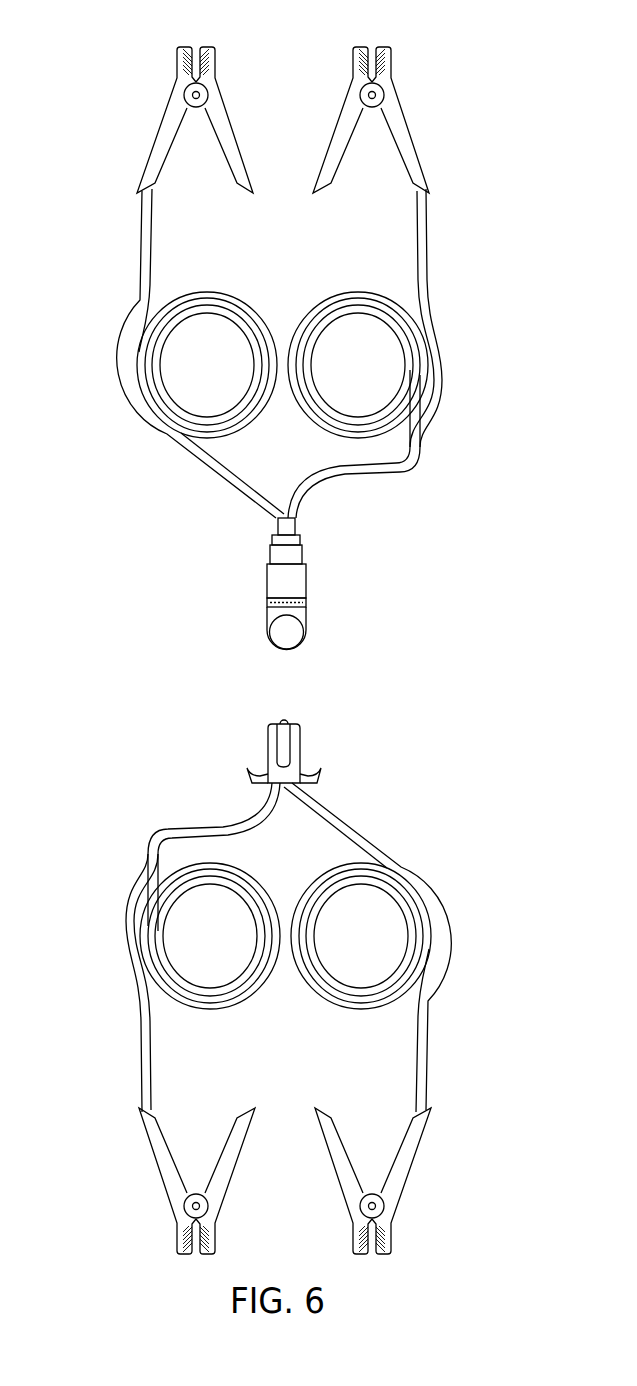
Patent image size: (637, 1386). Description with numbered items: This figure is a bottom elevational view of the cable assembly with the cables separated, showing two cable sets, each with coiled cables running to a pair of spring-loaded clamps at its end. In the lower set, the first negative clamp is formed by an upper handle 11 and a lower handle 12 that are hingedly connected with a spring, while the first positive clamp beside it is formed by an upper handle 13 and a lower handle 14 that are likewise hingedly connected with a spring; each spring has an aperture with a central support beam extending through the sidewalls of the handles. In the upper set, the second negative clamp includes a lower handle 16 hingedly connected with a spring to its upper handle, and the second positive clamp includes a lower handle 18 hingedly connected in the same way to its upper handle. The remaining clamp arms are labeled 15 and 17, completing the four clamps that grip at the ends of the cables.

The upper handle of the first negative clamp 11 is at (147, 1158).
The lower handle of the first negative clamp 12 is at (256, 1130).
The upper handle of the first positive clamp 13 is at (342, 1190).
The lower handle of the first positive clamp 14 is at (421, 1175).
The first arm of first clamp 15 is at (128, 165).
The lower handle of the second negative clamp 16 is at (219, 80).
The first arm of second clamp 17 is at (317, 167).
The lower handle of the second positive clamp 18 is at (426, 152).